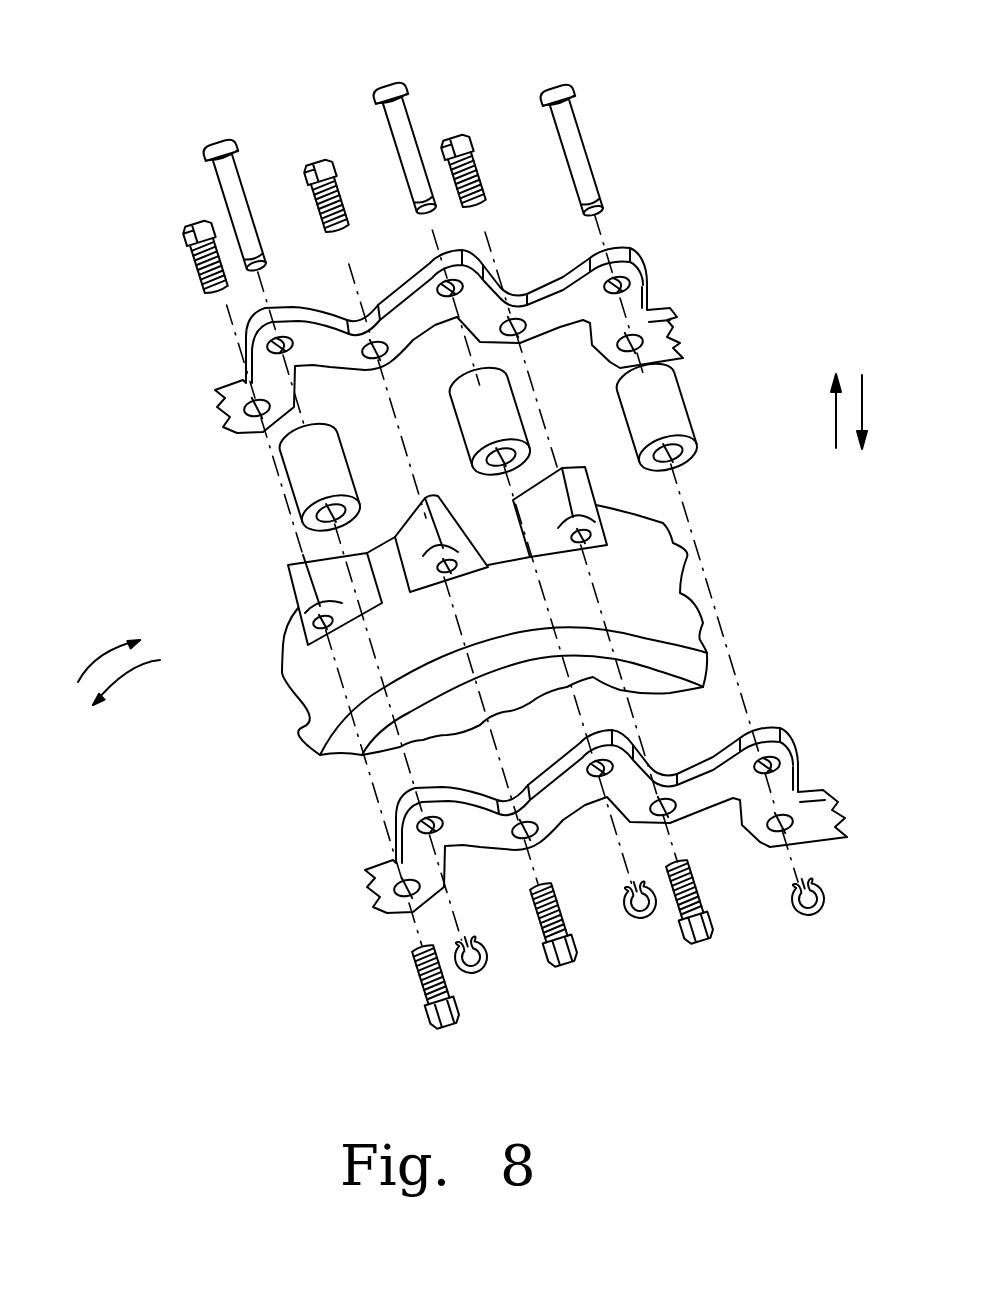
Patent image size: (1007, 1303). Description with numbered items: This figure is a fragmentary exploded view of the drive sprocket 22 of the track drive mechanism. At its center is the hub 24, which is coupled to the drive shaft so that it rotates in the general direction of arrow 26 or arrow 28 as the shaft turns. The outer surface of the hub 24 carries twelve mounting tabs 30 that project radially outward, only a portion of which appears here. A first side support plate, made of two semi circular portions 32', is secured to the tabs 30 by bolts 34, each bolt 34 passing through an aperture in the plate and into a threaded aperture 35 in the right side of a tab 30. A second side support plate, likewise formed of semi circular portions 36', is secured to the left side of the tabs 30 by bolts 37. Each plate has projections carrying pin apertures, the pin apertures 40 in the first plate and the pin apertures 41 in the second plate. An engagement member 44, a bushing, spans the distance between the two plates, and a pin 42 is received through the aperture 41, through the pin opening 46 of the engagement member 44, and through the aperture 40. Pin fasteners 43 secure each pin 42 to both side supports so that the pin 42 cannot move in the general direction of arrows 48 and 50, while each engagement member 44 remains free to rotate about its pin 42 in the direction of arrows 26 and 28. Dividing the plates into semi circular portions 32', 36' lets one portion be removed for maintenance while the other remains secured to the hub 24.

The drive sprocket 22 is at (140, 77).
The hub 24 is at (303, 720).
The arrow 26 is at (123, 673).
The arrow 28 is at (97, 655).
The mounting tab 30 is at (423, 514).
The semi circular portion 32' is at (625, 820).
The bolt 34 is at (432, 1025).
The threaded aperture 35 is at (330, 627).
The semi circular portion 36' is at (470, 340).
The bolt 37 is at (198, 224).
The pin aperture 40 is at (400, 833).
The pin aperture 41 is at (300, 308).
The pin 42 is at (235, 190).
The pin fastener 43 is at (490, 967).
The engagement member 44 is at (332, 440).
The pin opening 46 is at (302, 520).
The arrow 48 is at (862, 400).
The arrow 50 is at (835, 420).